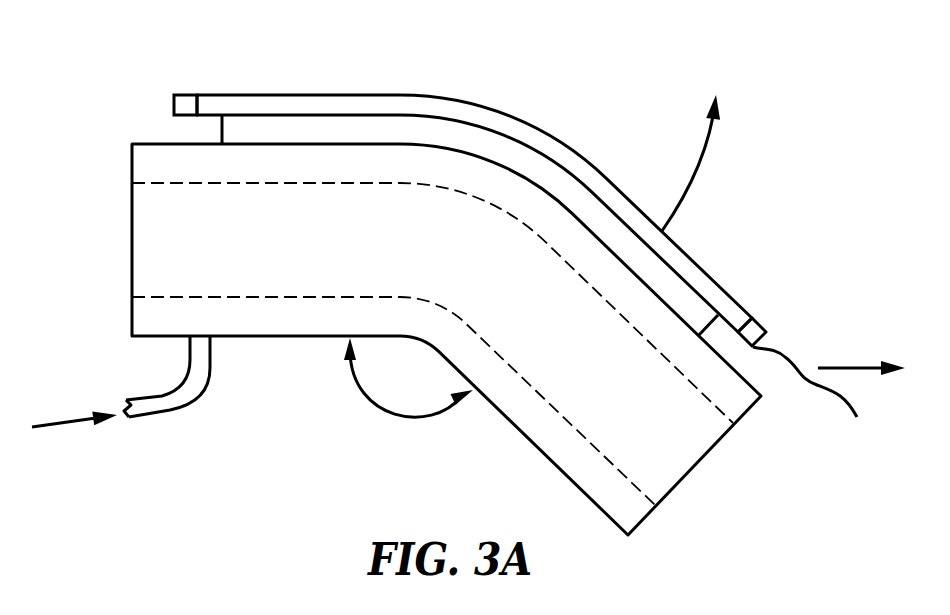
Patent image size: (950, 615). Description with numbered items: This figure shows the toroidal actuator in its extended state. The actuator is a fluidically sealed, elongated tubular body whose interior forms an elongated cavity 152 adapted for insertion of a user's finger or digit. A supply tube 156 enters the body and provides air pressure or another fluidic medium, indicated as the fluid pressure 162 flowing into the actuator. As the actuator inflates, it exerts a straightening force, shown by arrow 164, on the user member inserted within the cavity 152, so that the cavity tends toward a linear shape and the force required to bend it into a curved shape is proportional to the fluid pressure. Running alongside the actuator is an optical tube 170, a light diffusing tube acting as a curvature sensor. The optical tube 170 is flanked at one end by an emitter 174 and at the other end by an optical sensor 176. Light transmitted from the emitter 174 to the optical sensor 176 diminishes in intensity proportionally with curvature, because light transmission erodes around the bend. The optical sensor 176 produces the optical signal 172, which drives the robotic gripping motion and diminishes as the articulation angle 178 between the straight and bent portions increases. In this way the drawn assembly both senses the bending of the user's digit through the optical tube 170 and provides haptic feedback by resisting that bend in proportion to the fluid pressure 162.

The elongated cavity 152 is at (257, 255).
The supply tube 156 is at (172, 407).
The fluid pressure 162 is at (62, 424).
The straightening force arrow 164 is at (703, 169).
The optical tube 170 is at (548, 131).
The optical signal 172 is at (830, 393).
The emitter 174 is at (182, 95).
The optical sensor 176 is at (762, 320).
The articulation angle 178 is at (398, 410).